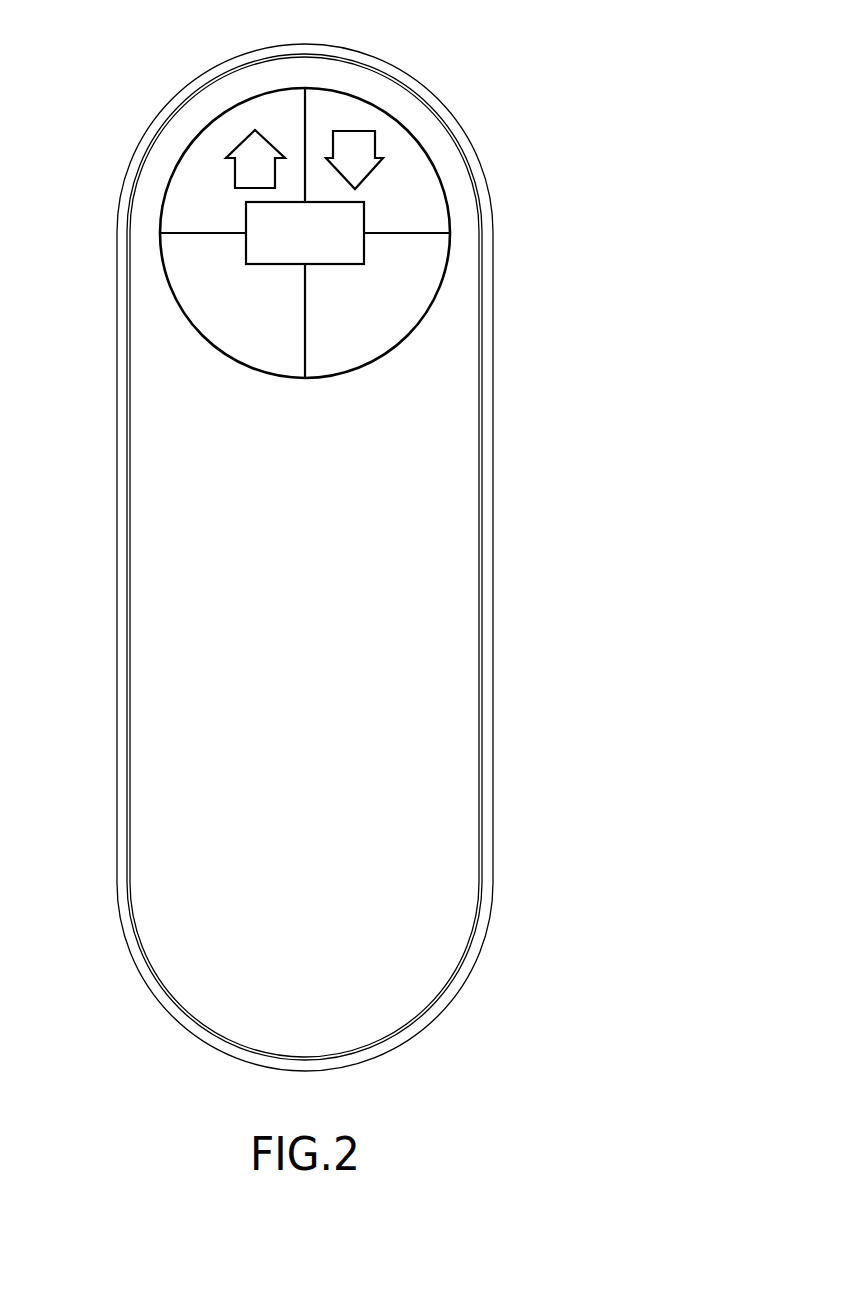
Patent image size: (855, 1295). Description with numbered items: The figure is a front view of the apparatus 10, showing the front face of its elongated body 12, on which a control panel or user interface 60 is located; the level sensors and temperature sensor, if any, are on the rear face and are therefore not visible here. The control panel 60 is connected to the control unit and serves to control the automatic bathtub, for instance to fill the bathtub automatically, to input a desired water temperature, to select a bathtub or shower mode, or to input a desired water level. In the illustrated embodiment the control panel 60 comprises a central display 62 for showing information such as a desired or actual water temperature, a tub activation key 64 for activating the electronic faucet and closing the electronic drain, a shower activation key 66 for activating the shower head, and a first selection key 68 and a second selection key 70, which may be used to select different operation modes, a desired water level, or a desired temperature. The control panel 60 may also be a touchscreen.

The apparatus 10 is at (361, 541).
The body 12 is at (492, 458).
The control panel 60 is at (304, 209).
The central display 62 is at (355, 225).
The tub activation key 64 is at (203, 311).
The shower activation key 66 is at (403, 277).
The first selection key 68 is at (210, 157).
The second selection key 70 is at (395, 173).